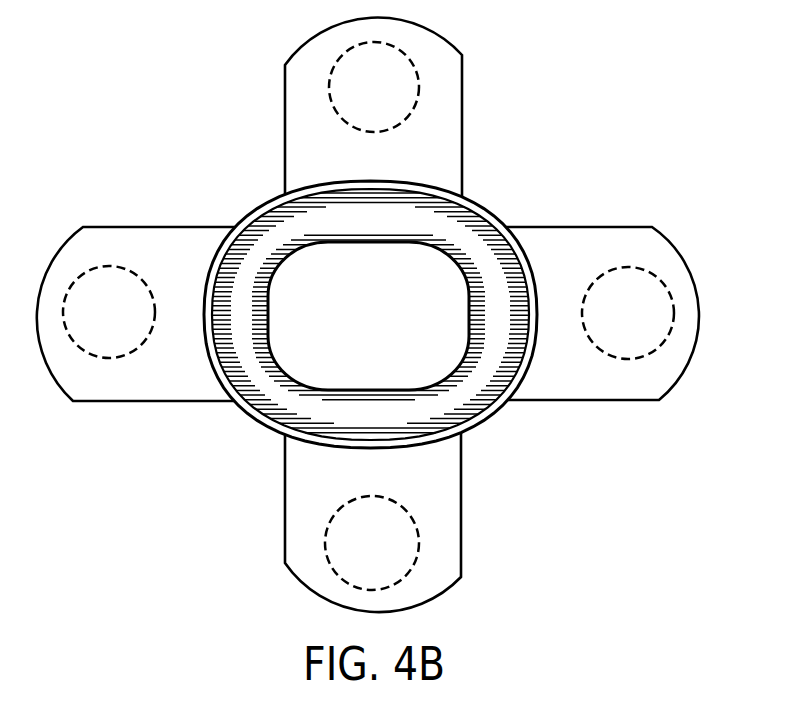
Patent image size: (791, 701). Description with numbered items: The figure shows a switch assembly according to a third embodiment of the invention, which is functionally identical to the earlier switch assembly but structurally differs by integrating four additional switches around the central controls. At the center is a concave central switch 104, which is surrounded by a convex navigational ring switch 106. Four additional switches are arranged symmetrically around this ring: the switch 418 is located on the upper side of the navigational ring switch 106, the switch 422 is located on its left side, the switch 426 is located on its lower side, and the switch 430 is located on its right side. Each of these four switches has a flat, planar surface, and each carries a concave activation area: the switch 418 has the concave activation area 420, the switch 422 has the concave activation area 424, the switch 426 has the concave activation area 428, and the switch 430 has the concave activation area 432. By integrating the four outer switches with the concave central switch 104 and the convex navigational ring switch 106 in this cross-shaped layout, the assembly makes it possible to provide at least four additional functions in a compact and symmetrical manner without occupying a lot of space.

The concave central switch 104 is at (423, 340).
The convex navigational ring switch 106 is at (460, 233).
The switch 418 is at (443, 89).
The concave activation area 420 is at (355, 99).
The switch 422 is at (115, 238).
The concave activation area 424 is at (107, 343).
The switch 426 is at (312, 556).
The concave activation area 428 is at (393, 546).
The switch 430 is at (635, 379).
The concave activation area 432 is at (640, 285).